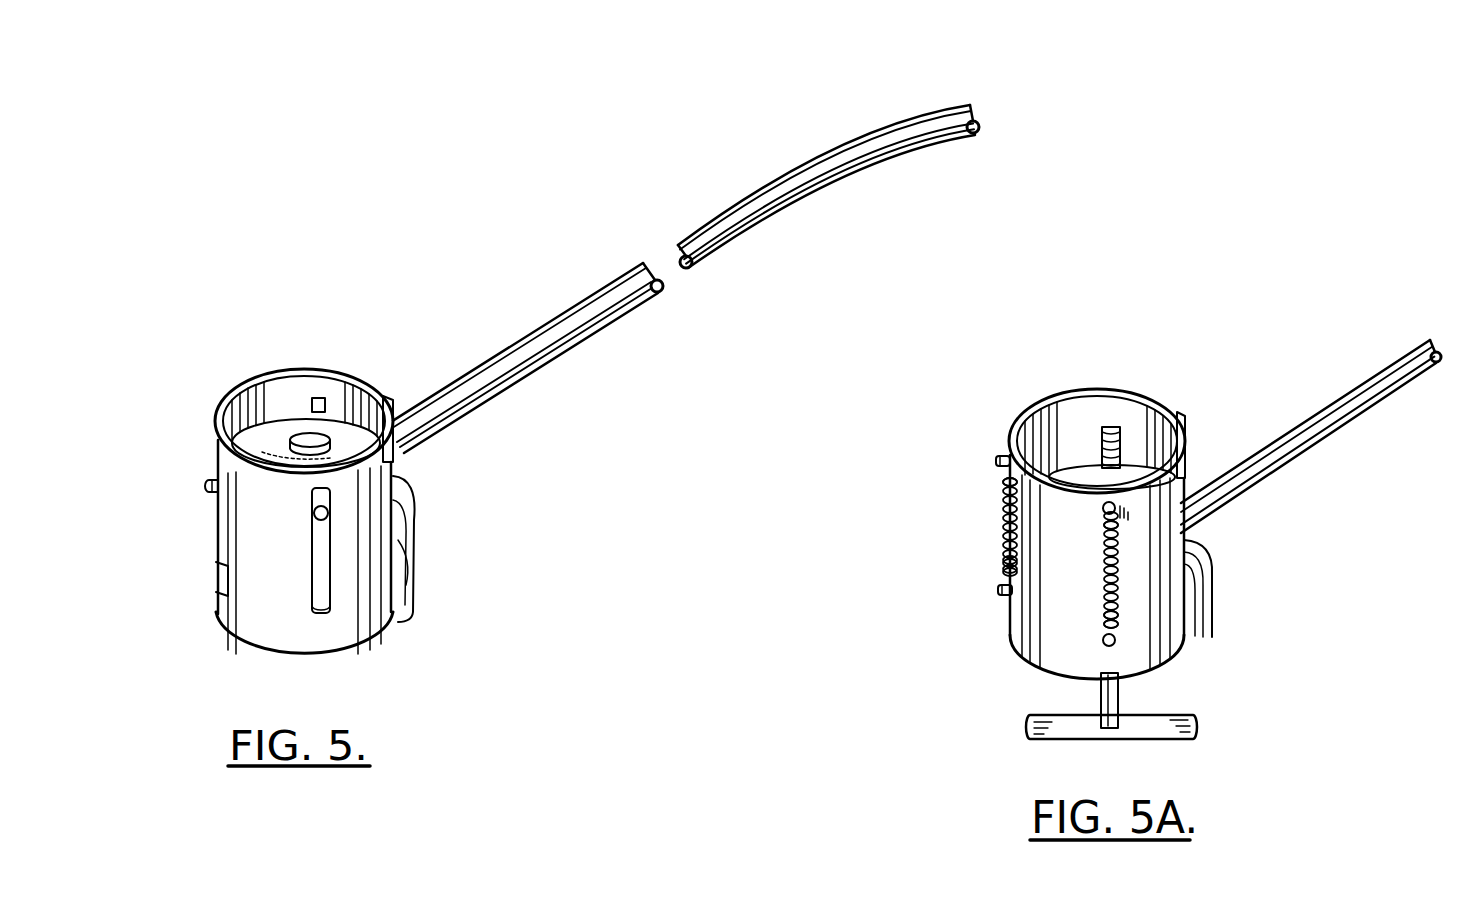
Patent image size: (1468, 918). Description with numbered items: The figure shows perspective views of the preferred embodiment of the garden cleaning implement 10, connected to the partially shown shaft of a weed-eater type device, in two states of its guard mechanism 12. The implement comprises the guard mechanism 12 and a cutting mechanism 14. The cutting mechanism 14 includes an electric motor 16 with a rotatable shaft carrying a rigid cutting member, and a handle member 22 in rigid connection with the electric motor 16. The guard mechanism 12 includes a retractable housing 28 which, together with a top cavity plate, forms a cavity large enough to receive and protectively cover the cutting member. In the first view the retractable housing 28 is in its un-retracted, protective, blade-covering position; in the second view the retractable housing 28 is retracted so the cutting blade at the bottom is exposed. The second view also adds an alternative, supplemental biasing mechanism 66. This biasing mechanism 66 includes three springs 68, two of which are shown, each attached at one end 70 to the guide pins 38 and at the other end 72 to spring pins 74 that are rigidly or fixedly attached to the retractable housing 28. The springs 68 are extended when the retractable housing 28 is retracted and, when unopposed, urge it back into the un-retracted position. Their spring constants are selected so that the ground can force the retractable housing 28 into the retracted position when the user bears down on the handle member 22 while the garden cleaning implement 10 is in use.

In FIG. 5, the garden cleaning implement 10 is at (370, 340).
In FIG. 5A, the garden cleaning implement 10 is at (1161, 366).
In FIG. 5, the guard mechanism 12 is at (210, 645).
In FIG. 5A, the guard mechanism 12 is at (1229, 594).
In FIG. 5, the cutting mechanism 14 is at (286, 410).
In FIG. 5A, the cutting mechanism 14 is at (1223, 723).
In FIG. 5, the electric motor 16 is at (338, 447).
In FIG. 5, the handle member 22 is at (722, 206).
In FIG. 5A, the handle member 22 is at (1303, 433).
In FIG. 5, the retractable housing 28 is at (371, 617).
In FIG. 5A, the retractable housing 28 is at (1208, 566).
In FIG. 5A, the guide pins 38 is at (1000, 593).
In FIG. 5A, the biasing mechanism 66 is at (933, 528).
In FIG. 5A, the springs 68 is at (1003, 528).
In FIG. 5A, the one end 70 is at (1003, 573).
In FIG. 5A, the other end 72 is at (1003, 480).
In FIG. 5A, the spring pins 74 is at (997, 458).